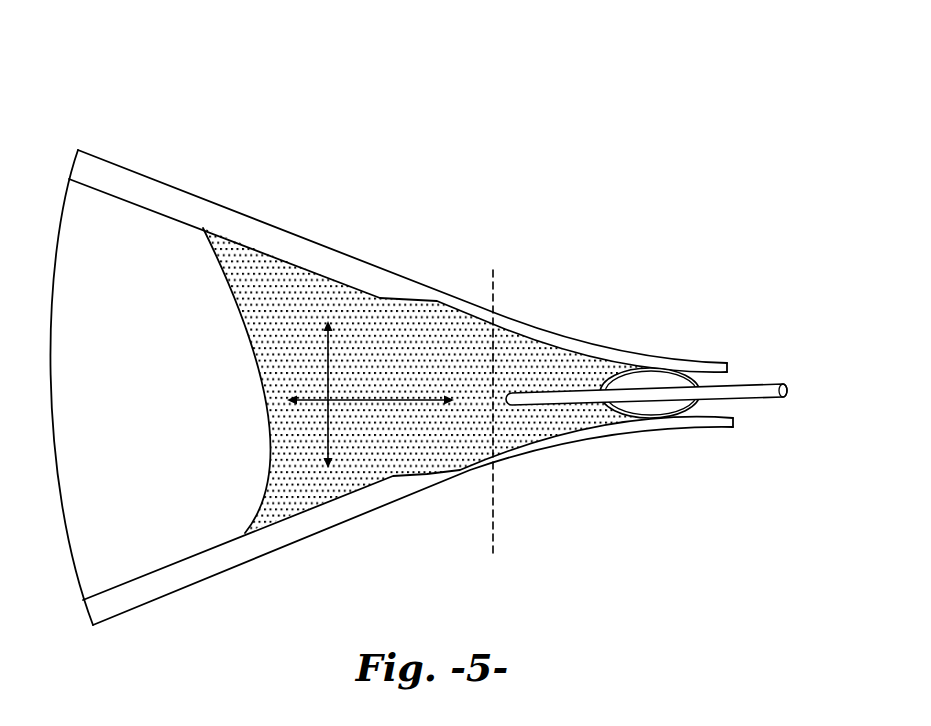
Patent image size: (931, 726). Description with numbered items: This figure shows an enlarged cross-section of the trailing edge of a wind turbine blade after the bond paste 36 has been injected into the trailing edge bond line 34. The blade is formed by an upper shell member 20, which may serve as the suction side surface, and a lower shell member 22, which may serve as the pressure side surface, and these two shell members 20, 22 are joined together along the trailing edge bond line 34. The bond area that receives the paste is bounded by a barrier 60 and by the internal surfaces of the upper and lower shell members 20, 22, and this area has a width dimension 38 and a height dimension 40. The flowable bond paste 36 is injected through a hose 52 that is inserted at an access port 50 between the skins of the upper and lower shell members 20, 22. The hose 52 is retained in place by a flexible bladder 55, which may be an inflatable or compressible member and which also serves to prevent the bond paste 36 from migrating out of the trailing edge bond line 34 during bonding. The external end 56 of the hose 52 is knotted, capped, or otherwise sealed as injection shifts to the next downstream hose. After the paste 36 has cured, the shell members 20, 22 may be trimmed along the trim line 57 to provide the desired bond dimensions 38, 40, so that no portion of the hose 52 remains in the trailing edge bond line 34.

The upper shell member 20 is at (132, 171).
The lower shell member 22 is at (112, 618).
The trailing edge bond line 34 is at (268, 343).
The bond paste 36 is at (486, 380).
The width dimension 38 is at (377, 402).
The height dimension 40 is at (325, 360).
The access port 50 is at (762, 350).
The hose 52 is at (647, 398).
The flexible bladder 55 is at (710, 365).
The external end 56 is at (790, 385).
The trim line 57 is at (495, 500).
The barrier 60 is at (267, 398).